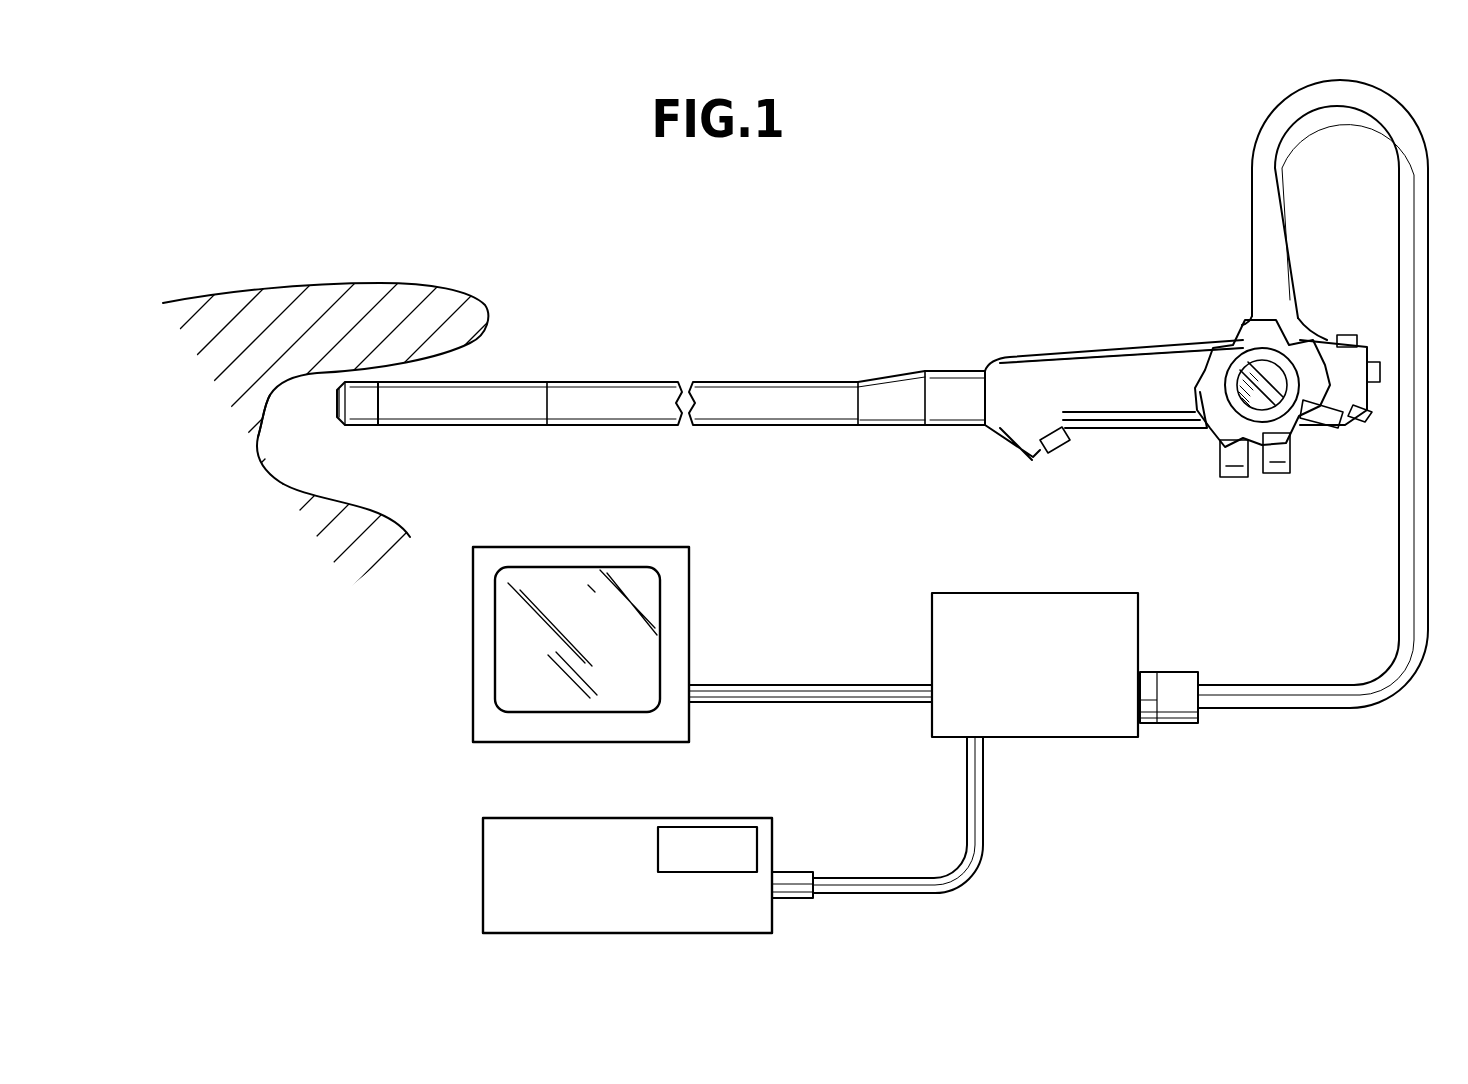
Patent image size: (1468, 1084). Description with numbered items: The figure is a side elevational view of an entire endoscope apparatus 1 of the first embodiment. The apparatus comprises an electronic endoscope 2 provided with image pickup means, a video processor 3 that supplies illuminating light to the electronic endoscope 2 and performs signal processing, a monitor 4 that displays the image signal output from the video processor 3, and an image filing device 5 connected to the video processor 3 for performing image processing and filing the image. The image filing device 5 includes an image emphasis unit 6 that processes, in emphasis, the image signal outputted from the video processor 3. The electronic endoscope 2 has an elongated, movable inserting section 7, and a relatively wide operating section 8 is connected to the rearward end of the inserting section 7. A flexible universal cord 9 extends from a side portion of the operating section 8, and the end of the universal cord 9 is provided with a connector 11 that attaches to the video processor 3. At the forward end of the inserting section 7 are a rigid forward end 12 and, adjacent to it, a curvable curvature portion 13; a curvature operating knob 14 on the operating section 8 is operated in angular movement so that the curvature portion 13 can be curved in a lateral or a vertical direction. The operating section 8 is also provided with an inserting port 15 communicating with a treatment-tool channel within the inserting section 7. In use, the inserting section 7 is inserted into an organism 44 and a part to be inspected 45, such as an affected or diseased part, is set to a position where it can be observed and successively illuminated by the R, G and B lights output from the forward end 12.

The endoscope apparatus 1 is at (1228, 768).
The electronic endoscope 2 is at (986, 331).
The video processor 3 is at (1063, 740).
The monitor 4 is at (690, 567).
The image filing device 5 is at (483, 883).
The image emphasis unit 6 is at (730, 827).
The inserting section 7 is at (604, 356).
The operating section 8 is at (1135, 345).
The universal cord 9 is at (1250, 194).
The connector 11 is at (1186, 670).
The forward end 12 is at (359, 428).
The curvature portion 13 is at (466, 428).
The curvature operating knob 14 is at (1235, 422).
The inserting port 15 is at (1055, 442).
The organism 44 is at (322, 280).
The part to be inspected 45 is at (267, 413).